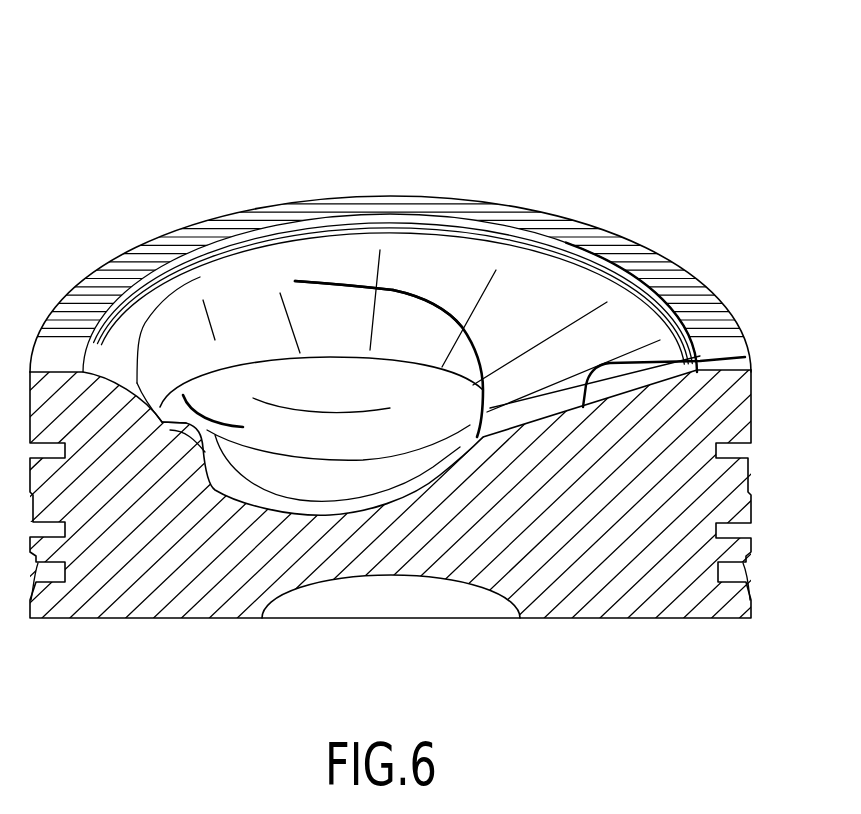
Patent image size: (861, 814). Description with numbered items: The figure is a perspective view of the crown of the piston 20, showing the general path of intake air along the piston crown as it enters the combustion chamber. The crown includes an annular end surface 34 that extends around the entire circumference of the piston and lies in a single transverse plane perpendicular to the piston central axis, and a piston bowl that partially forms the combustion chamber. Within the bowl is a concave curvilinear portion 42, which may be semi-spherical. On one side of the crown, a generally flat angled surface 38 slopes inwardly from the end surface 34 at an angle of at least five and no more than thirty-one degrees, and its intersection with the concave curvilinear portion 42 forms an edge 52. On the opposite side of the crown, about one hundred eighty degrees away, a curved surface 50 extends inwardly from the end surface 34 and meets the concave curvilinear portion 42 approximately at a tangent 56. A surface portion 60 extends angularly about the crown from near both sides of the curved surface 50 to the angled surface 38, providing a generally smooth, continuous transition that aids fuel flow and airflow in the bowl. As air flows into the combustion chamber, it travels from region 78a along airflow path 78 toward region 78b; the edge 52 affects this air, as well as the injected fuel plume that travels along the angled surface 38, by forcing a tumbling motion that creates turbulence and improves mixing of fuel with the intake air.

The piston 20 is at (578, 121).
The end surface 34 is at (693, 290).
The angled surface 38 is at (745, 357).
The concave curvilinear portion 42 is at (330, 490).
The curved surface 50 is at (137, 380).
The edge 52 is at (283, 430).
The tangent 56 is at (193, 274).
The surface portion 60 is at (348, 300).
The airflow path 78 is at (394, 290).
The region 78a is at (297, 281).
The region 78b is at (457, 320).